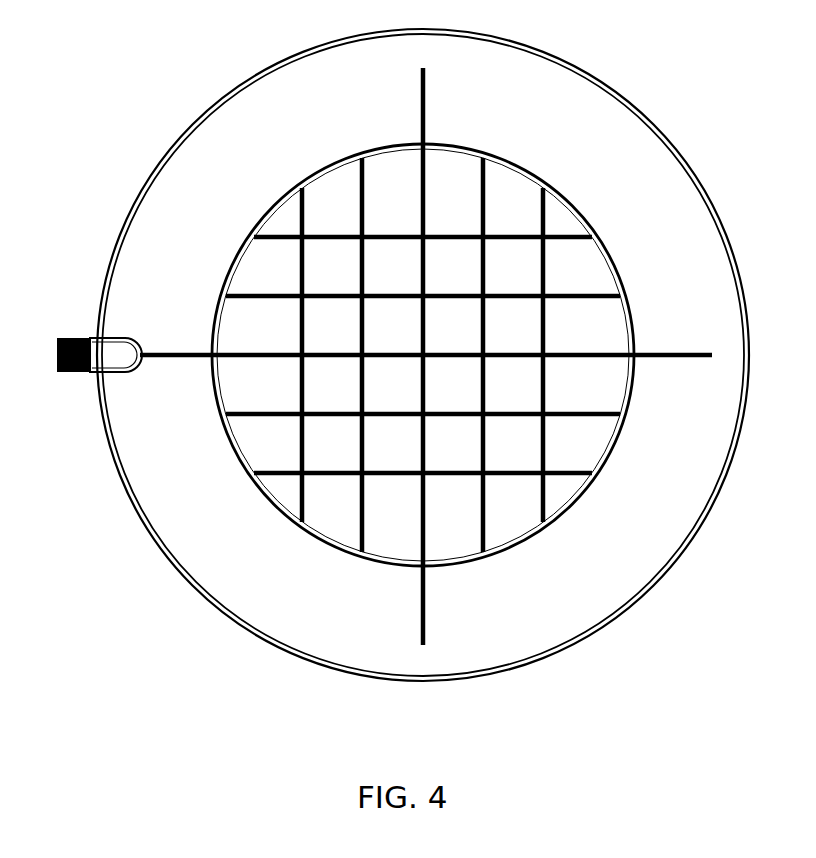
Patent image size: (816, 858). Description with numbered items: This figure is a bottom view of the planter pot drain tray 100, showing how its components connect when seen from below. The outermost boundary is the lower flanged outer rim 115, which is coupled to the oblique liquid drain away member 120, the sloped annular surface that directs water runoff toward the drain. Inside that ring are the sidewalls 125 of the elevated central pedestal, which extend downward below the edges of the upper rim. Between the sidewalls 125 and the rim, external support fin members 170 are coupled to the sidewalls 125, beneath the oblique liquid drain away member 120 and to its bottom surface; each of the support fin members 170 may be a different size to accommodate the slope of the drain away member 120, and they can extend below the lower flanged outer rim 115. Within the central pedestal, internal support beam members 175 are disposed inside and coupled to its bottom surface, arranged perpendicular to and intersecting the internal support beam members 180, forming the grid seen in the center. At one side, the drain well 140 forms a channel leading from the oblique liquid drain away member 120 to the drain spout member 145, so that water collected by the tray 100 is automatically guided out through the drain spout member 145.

The planter pot drain tray 100 is at (112, 124).
The lower flanged outer rim 115 is at (617, 612).
The oblique liquid drain away member 120 is at (586, 128).
The sidewalls 125 is at (228, 257).
The drain well 140 is at (105, 352).
The drain spout member 145 is at (65, 375).
The external support fin members 170 is at (415, 105).
The internal support beam members 175 is at (600, 351).
The internal support beam members 180 is at (300, 325).